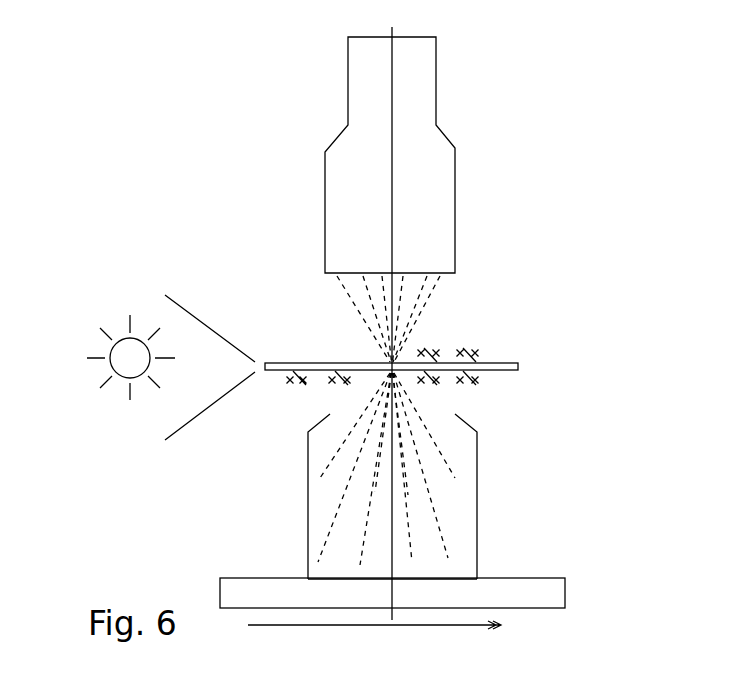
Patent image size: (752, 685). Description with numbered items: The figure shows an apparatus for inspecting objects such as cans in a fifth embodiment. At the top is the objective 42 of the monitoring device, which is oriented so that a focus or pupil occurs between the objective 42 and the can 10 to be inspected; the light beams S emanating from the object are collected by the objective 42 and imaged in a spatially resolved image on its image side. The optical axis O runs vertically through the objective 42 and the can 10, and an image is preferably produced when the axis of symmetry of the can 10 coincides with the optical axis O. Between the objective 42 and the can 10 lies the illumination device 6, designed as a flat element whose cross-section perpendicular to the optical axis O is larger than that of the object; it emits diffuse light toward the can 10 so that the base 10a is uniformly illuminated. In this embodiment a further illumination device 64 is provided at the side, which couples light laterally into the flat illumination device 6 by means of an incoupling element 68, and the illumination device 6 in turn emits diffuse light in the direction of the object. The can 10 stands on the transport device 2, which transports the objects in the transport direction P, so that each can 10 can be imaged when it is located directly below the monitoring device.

The optical axis O is at (392, 122).
The objective 42 is at (423, 200).
The light beams S is at (423, 483).
The illumination device 6 is at (317, 363).
The illumination device 64 is at (120, 350).
The incoupling element 68 is at (187, 307).
The can 10 is at (477, 527).
The base 10a is at (425, 575).
The transport device 2 is at (492, 602).
The transport direction P is at (388, 626).